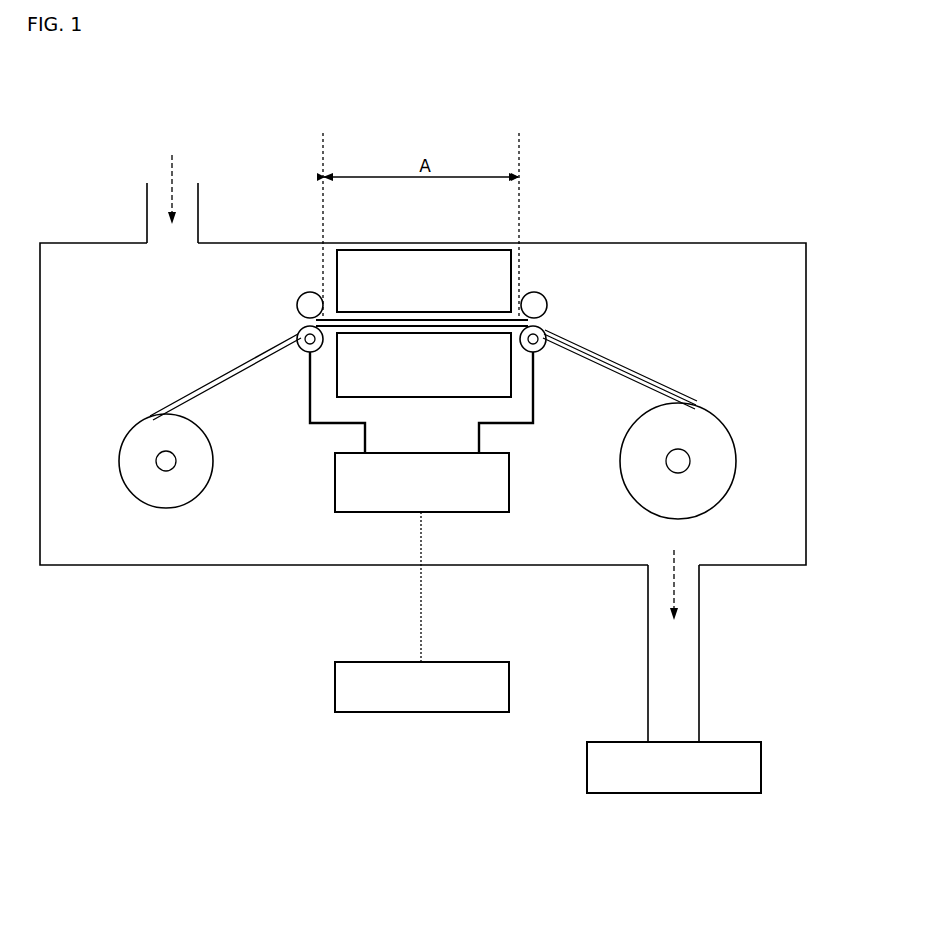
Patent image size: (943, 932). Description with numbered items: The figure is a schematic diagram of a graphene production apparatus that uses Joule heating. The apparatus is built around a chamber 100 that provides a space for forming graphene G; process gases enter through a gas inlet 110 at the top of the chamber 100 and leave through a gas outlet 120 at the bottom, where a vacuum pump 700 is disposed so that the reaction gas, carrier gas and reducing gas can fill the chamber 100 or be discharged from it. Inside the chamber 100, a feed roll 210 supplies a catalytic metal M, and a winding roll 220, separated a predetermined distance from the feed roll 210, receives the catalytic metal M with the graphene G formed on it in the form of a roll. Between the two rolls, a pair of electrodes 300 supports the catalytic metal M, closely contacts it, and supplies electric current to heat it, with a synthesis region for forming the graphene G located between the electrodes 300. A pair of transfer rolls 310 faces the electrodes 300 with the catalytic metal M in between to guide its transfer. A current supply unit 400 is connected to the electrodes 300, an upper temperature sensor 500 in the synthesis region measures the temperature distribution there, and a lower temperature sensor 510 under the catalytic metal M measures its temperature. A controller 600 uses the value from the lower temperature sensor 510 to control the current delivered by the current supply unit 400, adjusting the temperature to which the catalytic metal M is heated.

The chamber 100 is at (744, 243).
The gas inlet 110 is at (146, 211).
The gas outlet 120 is at (700, 651).
The feed roll 210 is at (165, 509).
The winding roll 220 is at (737, 459).
The pair of electrodes 300 is at (300, 350).
The pair of transfer rolls 310 is at (306, 300).
The current supply unit 400 is at (511, 481).
The upper temperature sensor 500 is at (423, 250).
The lower temperature sensor 510 is at (422, 397).
The controller 600 is at (511, 687).
The vacuum pump 700 is at (763, 766).
The catalytic metal M is at (250, 356).
The graphene G is at (565, 336).